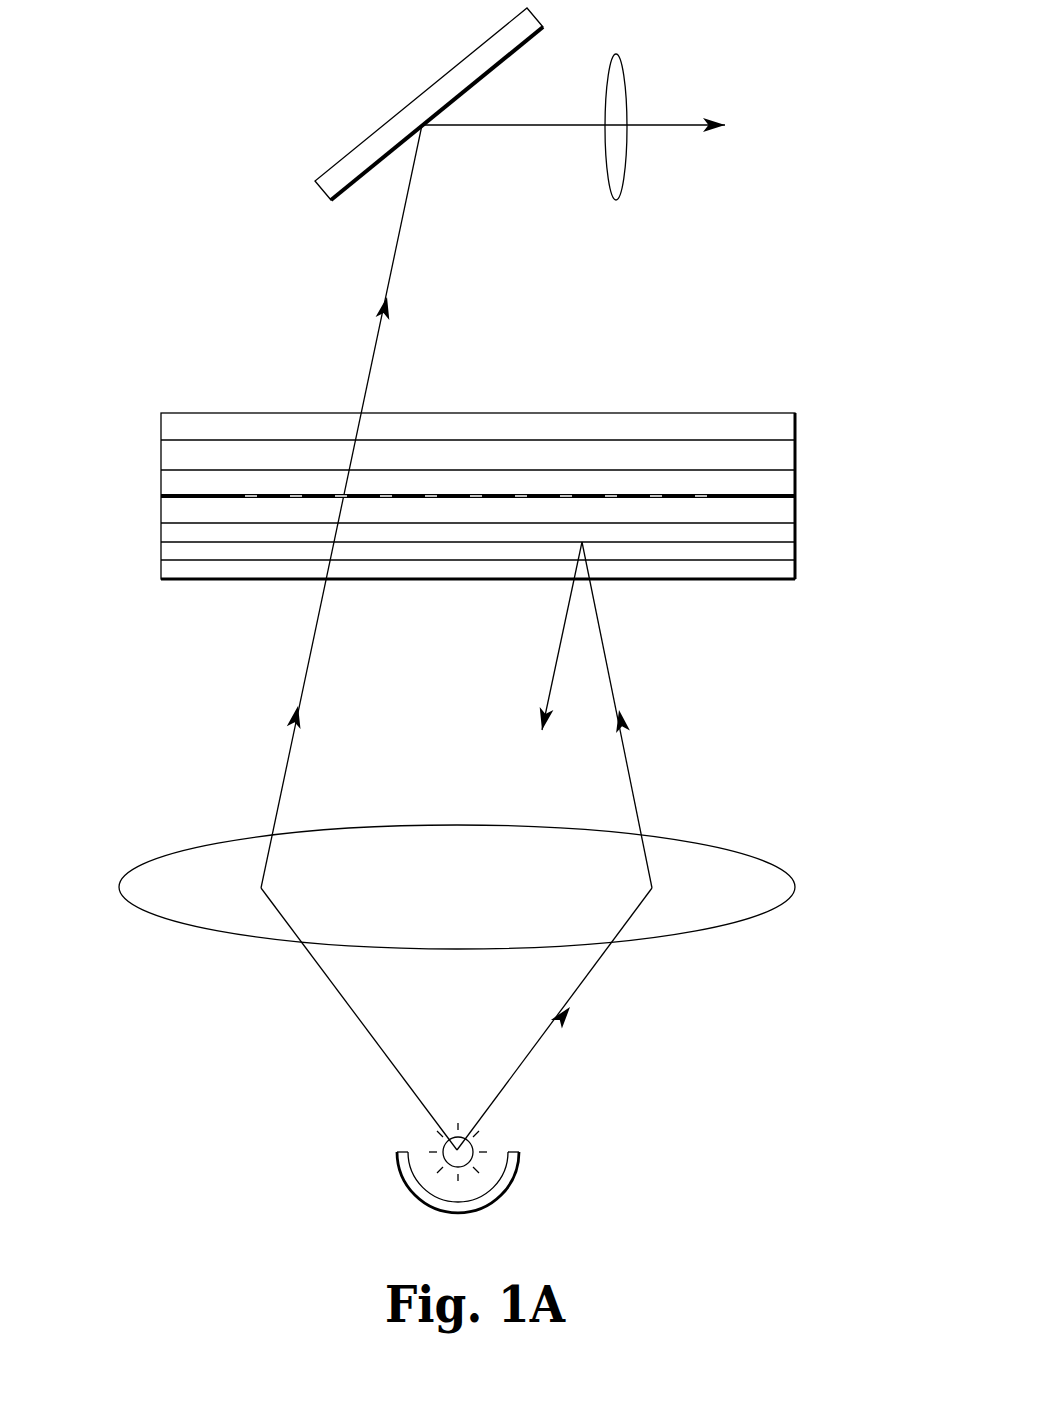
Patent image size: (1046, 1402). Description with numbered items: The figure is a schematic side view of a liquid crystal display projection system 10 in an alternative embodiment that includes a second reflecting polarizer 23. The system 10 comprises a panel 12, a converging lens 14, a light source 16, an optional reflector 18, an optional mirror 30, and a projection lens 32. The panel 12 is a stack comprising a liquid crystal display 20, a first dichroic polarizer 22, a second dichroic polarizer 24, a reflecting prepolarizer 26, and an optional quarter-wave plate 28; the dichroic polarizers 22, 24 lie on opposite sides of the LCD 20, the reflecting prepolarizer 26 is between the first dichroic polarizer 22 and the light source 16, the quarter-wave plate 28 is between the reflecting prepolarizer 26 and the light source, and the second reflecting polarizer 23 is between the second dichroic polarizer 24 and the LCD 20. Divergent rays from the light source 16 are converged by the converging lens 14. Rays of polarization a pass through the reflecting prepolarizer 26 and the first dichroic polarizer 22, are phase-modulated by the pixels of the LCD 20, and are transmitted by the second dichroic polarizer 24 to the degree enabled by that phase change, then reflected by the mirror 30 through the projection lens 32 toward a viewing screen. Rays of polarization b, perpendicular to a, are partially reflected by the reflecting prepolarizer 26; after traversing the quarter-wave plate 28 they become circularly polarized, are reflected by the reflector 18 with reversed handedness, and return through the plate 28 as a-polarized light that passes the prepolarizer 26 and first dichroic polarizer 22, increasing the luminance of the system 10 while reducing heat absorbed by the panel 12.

The system 10 is at (238, 243).
The panel 12 is at (512, 491).
The converging lens 14 is at (753, 858).
The light source 16 is at (472, 1143).
The reflector 18 is at (498, 1187).
The liquid crystal display 20 is at (807, 472).
The first dichroic polarizer 22 is at (770, 533).
The second reflecting polarizer 23 is at (783, 458).
The second dichroic polarizer 24 is at (555, 425).
The reflecting prepolarizer 26 is at (783, 552).
The quarter-wave plate 28 is at (725, 573).
The mirror 30 is at (453, 80).
The projection lens 32 is at (605, 93).
The polarization state a is at (412, 1095).
The polarization state b is at (525, 1055).